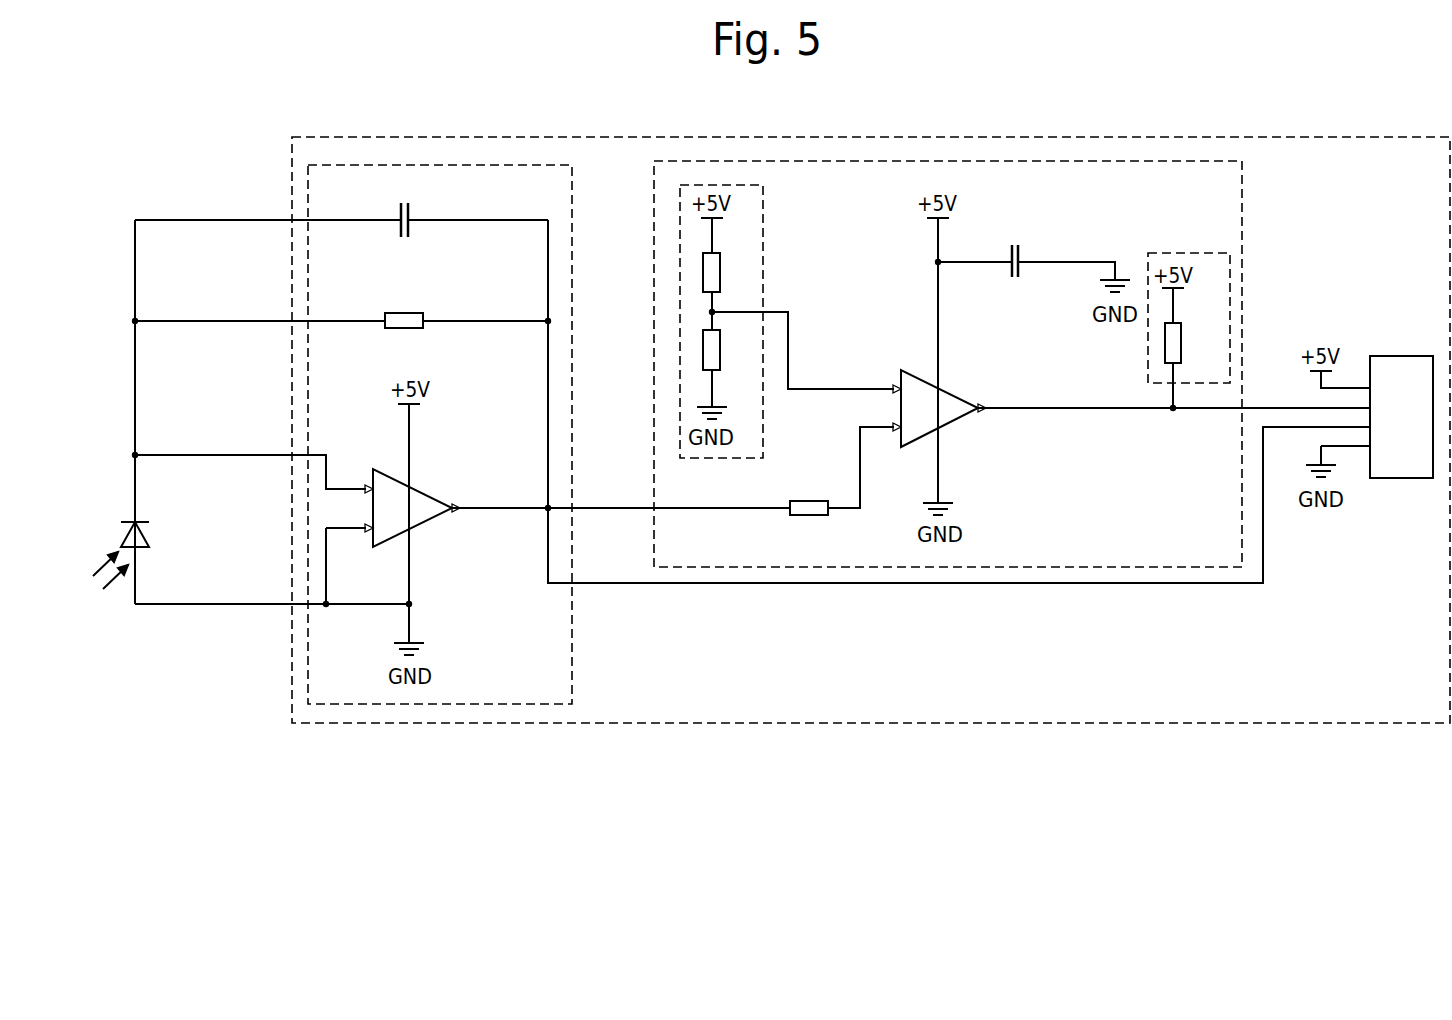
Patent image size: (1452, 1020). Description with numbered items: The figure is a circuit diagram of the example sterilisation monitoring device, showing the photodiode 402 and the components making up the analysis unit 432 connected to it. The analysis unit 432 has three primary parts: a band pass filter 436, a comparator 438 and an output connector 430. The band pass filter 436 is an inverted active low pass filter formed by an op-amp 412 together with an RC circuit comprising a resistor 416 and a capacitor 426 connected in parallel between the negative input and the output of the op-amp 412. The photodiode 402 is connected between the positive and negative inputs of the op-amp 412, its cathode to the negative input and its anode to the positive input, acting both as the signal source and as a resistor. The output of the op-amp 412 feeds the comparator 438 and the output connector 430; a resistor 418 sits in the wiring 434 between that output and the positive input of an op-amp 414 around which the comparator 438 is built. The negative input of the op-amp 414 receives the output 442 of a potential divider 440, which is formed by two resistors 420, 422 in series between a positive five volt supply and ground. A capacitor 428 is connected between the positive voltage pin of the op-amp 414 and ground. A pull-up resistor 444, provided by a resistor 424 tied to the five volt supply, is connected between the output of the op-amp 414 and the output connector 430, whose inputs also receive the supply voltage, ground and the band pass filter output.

The photodiode 402 is at (125, 540).
The op-amp 412 is at (418, 507).
The op-amp 414 is at (953, 410).
The resistor 416 is at (413, 320).
The resistor 418 is at (790, 503).
The resistor 420 is at (703, 275).
The resistor 422 is at (703, 352).
The resistor 424 is at (1165, 350).
The capacitor 426 is at (400, 216).
The capacitor 428 is at (1020, 255).
The output connector 430 is at (1412, 360).
The analysis unit 432 is at (1292, 137).
The wiring 434 is at (1265, 553).
The band pass filter 436 is at (510, 165).
The comparator 438 is at (1073, 568).
The potential divider 440 is at (763, 197).
The output 442 is at (745, 312).
The pull-up resistor 444 is at (1230, 280).